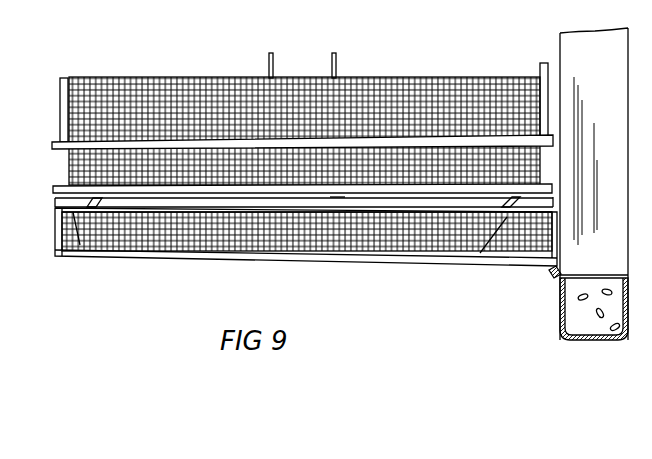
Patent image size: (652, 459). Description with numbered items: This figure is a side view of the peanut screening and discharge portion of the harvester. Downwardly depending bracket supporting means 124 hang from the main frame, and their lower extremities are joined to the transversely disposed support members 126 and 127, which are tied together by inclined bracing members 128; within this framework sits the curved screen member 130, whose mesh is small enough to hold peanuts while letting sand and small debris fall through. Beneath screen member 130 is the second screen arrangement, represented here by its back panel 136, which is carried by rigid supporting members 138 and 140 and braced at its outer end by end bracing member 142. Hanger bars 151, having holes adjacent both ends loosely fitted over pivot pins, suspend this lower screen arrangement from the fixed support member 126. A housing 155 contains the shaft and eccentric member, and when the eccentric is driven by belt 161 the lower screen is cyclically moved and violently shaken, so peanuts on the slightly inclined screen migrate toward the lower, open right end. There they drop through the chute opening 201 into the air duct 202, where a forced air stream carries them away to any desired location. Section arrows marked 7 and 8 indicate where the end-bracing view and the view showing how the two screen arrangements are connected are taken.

The bracket supporting means 124 is at (63, 78).
The transverse support member 126 is at (57, 198).
The transverse support member 127 is at (53, 143).
The inclined bracing member 128 is at (63, 167).
The screen member 130 is at (437, 77).
The back panel 136 is at (143, 212).
The rigid supporting member 138 is at (175, 208).
The rigid supporting member 140 is at (58, 250).
The end bracing member 142 is at (16, 321).
The hanger bar 151 is at (85, 210).
The housing 155 is at (335, 197).
The belt 161 is at (336, 70).
The chute opening 201 is at (556, 281).
The air duct 202 is at (592, 33).
The section line 7— 7 is at (25, 203).
The section line 8— 8 is at (3, 296).